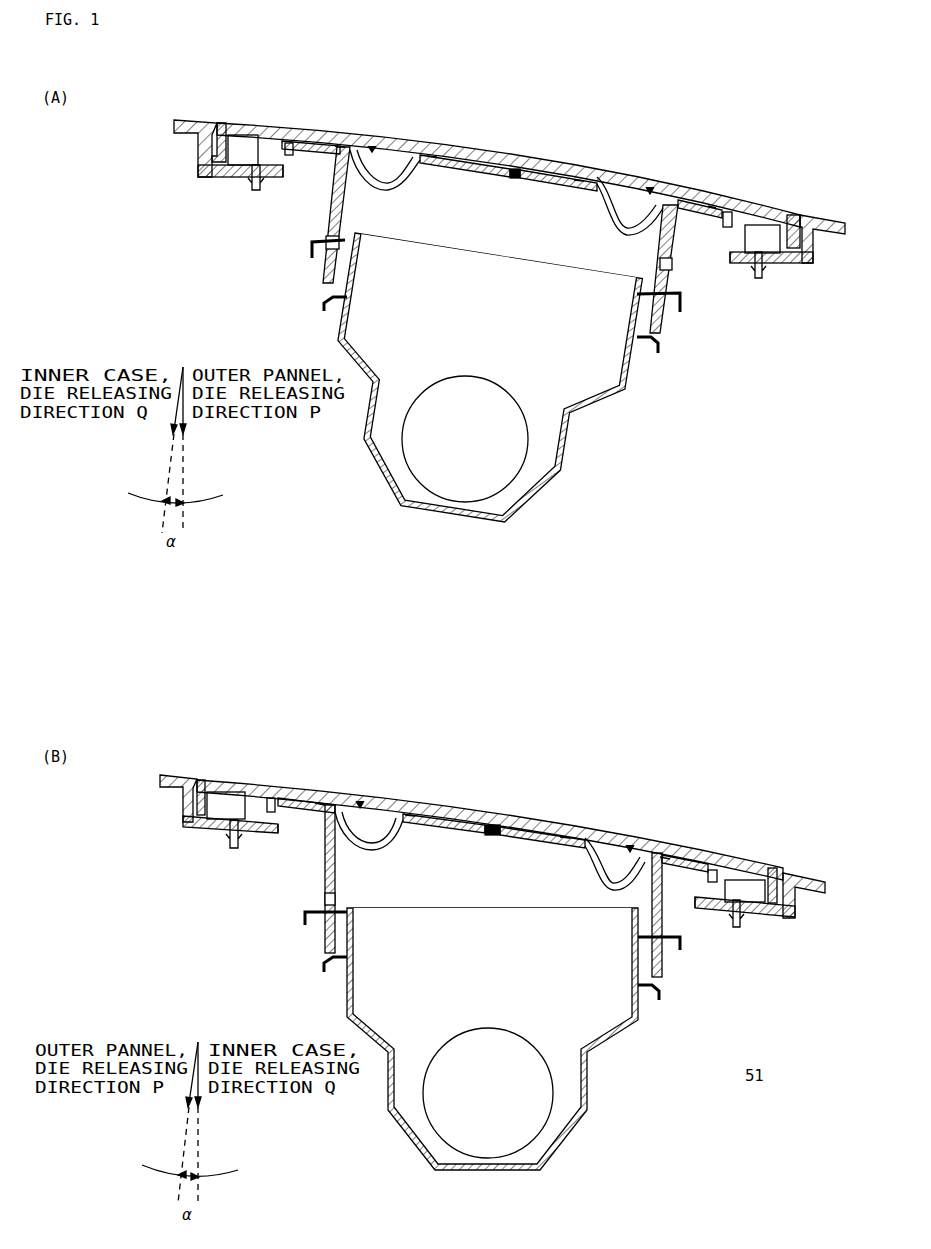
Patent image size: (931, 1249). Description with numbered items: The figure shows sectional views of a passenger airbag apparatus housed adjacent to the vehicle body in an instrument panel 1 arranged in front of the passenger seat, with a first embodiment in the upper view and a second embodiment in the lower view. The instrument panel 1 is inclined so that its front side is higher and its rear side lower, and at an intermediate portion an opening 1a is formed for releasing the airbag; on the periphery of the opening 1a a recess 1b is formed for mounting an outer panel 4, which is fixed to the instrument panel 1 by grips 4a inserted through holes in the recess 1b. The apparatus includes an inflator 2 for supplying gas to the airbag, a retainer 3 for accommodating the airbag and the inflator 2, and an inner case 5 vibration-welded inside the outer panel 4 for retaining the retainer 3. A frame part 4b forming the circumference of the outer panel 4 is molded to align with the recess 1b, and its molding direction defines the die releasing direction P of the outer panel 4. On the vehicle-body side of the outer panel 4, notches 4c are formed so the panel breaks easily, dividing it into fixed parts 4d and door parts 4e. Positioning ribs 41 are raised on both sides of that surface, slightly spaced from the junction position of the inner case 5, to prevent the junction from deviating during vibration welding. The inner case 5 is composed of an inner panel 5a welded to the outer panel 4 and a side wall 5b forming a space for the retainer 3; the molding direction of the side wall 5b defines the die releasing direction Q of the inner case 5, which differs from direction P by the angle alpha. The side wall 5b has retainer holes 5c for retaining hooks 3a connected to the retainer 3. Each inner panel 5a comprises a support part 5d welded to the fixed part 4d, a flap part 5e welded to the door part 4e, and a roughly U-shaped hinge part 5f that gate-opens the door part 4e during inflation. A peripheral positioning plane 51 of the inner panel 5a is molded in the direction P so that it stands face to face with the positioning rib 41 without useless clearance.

The instrument panel 1 is at (200, 120).
The opening 1a is at (285, 172).
The recess 1b is at (200, 160).
The inflator 2 is at (497, 470).
The retainer 3 is at (598, 420).
The hook 3a is at (318, 250).
The outer panel 4 is at (462, 130).
The grip 4a is at (255, 175).
The frame part 4b is at (228, 140).
The notch 4c is at (370, 143).
The fixed part 4d is at (335, 146).
The door part 4e is at (432, 150).
The inner case 5 is at (480, 559).
The inner panel 5a is at (428, 183).
The side wall 5b is at (323, 290).
The retainer hole 5c is at (668, 250).
The support part 5d is at (678, 225).
The flap part 5e is at (545, 175).
The hinge part 5f is at (618, 250).
The positioning rib 41 is at (289, 145).
The positioning plane 51 is at (287, 153).